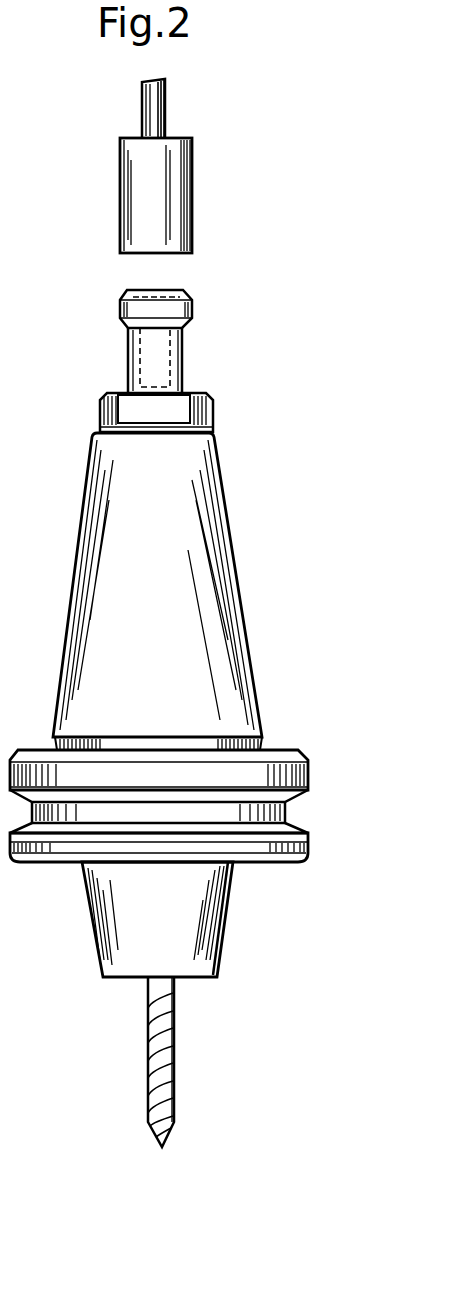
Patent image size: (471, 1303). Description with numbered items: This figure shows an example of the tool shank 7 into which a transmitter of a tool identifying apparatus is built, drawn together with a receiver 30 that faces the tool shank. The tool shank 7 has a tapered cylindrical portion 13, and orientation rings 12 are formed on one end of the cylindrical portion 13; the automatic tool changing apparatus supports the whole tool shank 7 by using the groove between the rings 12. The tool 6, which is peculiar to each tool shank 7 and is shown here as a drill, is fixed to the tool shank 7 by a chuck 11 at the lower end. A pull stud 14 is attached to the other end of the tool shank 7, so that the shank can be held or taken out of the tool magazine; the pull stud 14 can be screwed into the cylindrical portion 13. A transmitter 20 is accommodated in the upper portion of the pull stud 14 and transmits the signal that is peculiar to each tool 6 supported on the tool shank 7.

The tool shank 7 is at (280, 502).
The pin 30 is at (190, 188).
The pull stud 14 is at (120, 310).
The transmitter 20 is at (165, 347).
The tapered cylindrical portion 13 is at (230, 585).
The orientation rings 12 is at (308, 778).
The chuck 11 is at (212, 943).
The tool 6 is at (167, 1052).